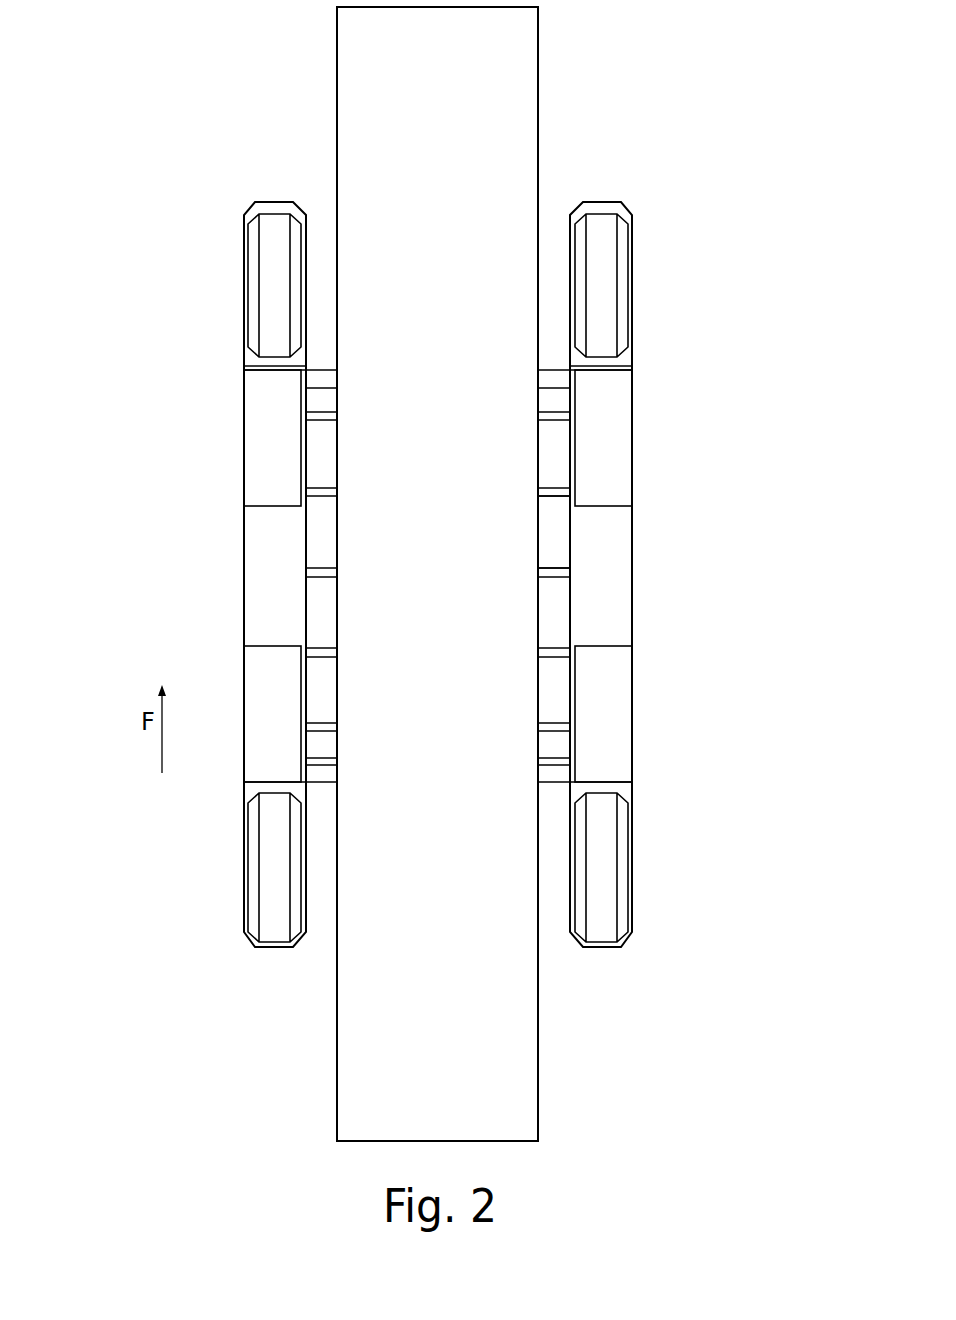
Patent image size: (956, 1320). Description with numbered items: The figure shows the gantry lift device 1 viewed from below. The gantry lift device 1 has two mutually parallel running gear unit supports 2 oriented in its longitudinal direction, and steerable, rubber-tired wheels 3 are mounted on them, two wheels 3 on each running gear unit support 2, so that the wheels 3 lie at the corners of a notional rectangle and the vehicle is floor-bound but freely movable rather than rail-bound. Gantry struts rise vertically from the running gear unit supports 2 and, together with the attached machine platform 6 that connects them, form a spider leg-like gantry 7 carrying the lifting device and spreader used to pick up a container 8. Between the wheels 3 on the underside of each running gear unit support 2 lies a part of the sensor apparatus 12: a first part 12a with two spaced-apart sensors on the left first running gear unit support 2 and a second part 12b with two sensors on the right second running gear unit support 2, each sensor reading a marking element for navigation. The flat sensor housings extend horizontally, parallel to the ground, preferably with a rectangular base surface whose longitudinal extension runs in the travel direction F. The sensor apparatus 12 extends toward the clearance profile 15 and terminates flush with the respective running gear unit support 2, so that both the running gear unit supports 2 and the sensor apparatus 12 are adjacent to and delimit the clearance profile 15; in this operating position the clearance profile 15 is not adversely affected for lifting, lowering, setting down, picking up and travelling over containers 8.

The gantry lift device 1 is at (436, 574).
The running gear unit support 2 is at (436, 574).
The wheel 3 is at (235, 255).
The machine platform 6 is at (518, 576).
The gantry 7 is at (558, 443).
The container 8 is at (330, 91).
The sensor apparatus 12 is at (436, 580).
The first part of the sensor apparatus 12a is at (604, 483).
The second part of the sensor apparatus 12b is at (270, 436).
The clearance profile 15 is at (563, 526).